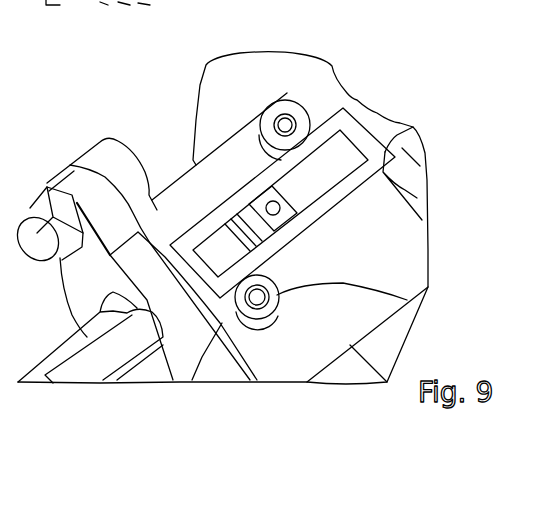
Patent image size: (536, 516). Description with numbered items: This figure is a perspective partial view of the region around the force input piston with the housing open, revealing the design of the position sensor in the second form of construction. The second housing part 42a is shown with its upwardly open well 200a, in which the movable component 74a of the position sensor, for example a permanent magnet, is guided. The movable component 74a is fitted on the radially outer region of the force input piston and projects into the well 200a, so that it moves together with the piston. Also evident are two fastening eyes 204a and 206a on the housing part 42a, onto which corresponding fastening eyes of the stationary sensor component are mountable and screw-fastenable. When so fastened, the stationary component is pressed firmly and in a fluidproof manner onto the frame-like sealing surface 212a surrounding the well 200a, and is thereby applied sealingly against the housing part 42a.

The second housing part 42a is at (395, 232).
The movable component of the position sensor 74a is at (247, 210).
The well 200a is at (342, 142).
The fastening eye 204a is at (293, 110).
The fastening eye 206a is at (407, 300).
The frame-like sealing surface 212a is at (415, 127).